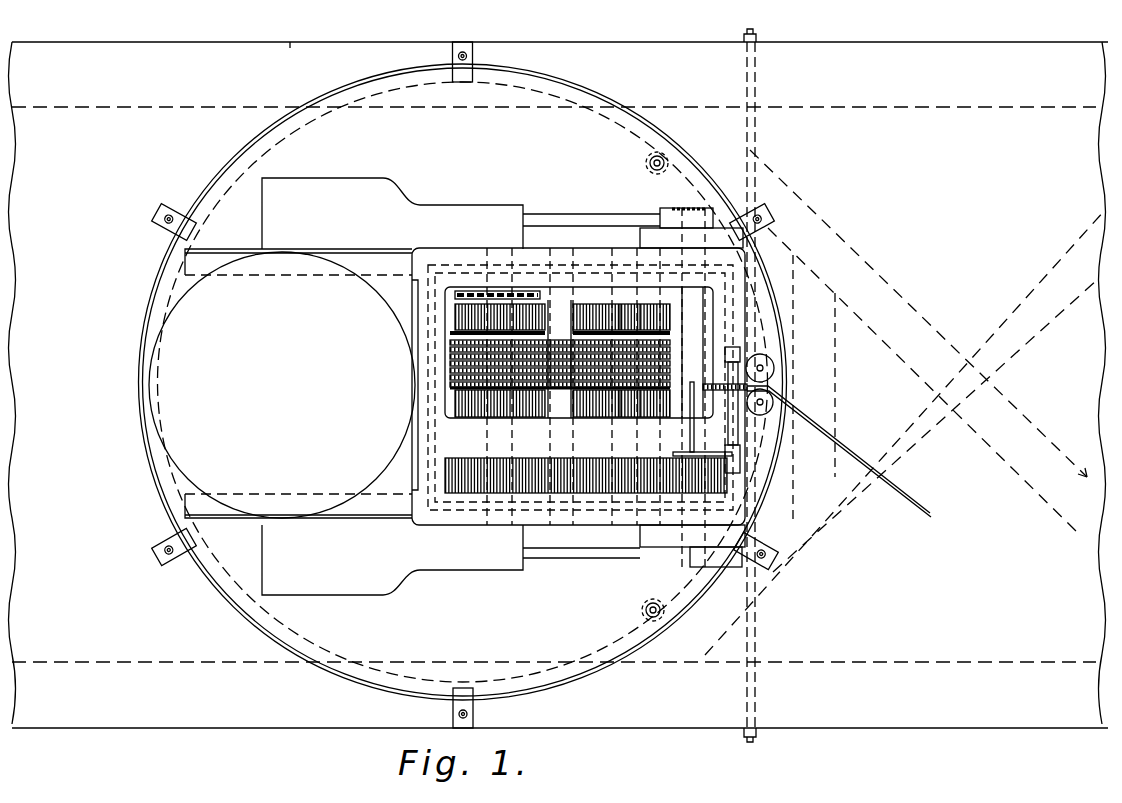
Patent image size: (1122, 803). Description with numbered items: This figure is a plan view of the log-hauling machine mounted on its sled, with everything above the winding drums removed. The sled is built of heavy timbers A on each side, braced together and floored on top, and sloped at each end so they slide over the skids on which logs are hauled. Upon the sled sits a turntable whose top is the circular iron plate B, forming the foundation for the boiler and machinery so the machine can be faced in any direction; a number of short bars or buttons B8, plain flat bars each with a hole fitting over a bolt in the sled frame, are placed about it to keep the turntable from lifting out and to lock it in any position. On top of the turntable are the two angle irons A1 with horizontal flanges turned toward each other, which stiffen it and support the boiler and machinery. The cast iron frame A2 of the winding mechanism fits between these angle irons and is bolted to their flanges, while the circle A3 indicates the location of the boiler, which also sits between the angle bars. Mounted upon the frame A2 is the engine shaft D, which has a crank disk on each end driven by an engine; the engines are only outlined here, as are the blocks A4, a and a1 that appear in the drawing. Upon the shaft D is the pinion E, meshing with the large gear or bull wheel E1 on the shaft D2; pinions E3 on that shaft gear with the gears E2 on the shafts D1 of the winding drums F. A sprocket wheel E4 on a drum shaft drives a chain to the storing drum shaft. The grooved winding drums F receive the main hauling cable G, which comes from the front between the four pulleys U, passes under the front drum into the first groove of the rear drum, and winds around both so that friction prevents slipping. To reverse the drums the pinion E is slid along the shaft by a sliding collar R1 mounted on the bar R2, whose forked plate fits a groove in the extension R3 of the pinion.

The heavy timber A is at (559, 382).
The angle iron A1 is at (298, 374).
The cast iron frame A2 is at (590, 262).
The boiler location circle A3 is at (383, 290).
The end blocks A4 is at (461, 386).
The circular iron plate B is at (463, 382).
The short bars or buttons B8 is at (157, 216).
The engine shaft D is at (692, 352).
The winding drum shaft D1 is at (497, 256).
The bull wheel shaft D2 is at (547, 364).
The pinion E is at (705, 484).
The large gear or bull wheel E1 is at (586, 484).
The gear E2 is at (455, 322).
The pinion E3 is at (600, 365).
The sprocket wheel E4 is at (496, 286).
The winding drum F is at (452, 347).
The main or hauling cable G is at (897, 495).
The sliding collar R1 is at (740, 453).
The bar R2 is at (738, 423).
The extension of the pinion R3 is at (688, 422).
The pulley U is at (776, 368).
The block a is at (641, 237).
The clamp block a1 is at (689, 208).